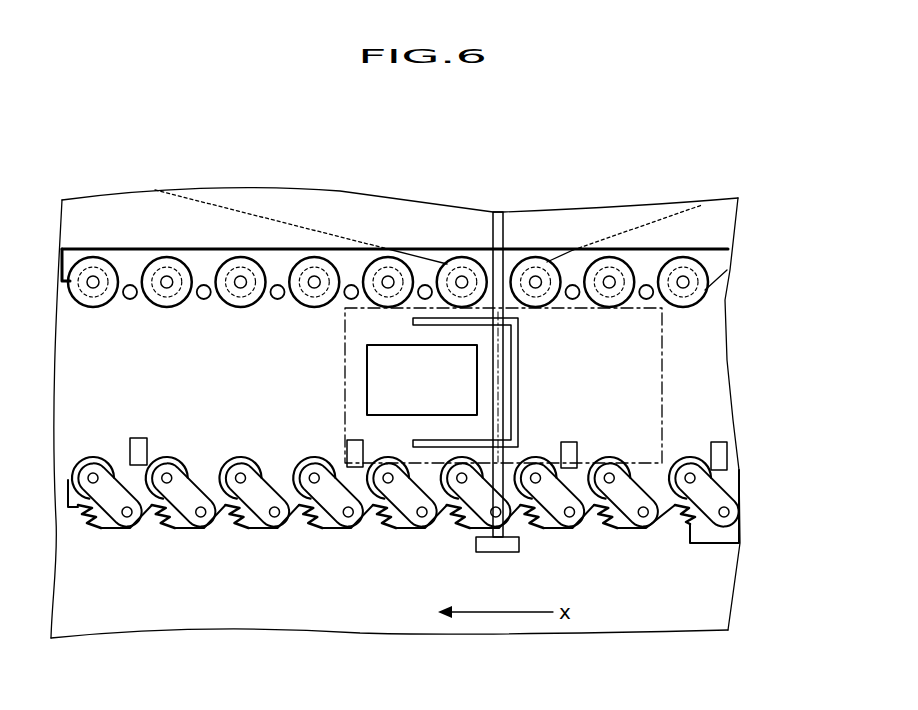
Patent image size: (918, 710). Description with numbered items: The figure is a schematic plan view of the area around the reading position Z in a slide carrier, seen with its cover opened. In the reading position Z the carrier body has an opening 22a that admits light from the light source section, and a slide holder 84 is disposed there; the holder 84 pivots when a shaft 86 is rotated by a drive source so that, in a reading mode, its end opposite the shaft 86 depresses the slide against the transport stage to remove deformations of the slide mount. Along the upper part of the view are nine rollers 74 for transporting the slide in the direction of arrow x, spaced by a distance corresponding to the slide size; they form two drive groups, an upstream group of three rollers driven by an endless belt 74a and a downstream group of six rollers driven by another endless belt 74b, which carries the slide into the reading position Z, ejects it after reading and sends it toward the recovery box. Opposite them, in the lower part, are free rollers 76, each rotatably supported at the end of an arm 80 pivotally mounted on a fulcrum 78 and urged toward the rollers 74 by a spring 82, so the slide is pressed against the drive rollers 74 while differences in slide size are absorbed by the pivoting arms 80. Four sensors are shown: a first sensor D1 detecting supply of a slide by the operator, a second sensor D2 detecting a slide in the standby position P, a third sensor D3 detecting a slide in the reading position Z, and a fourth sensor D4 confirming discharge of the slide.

The rollers 74 is at (93, 307).
The endless belt 74a is at (640, 226).
The endless belt 74b is at (192, 200).
The free rollers 76 is at (163, 458).
The fulcrum 78 is at (431, 516).
The arm 80 is at (187, 503).
The springs 82 is at (168, 516).
The slide holder 84 is at (521, 334).
The shaft 86 is at (493, 226).
The opening 22a is at (380, 363).
The reading position Z is at (345, 375).
The standby position P is at (662, 372).
The first sensor D1 is at (728, 452).
The second sensor D2 is at (569, 442).
The third sensor D3 is at (349, 446).
The fourth sensor D4 is at (139, 439).